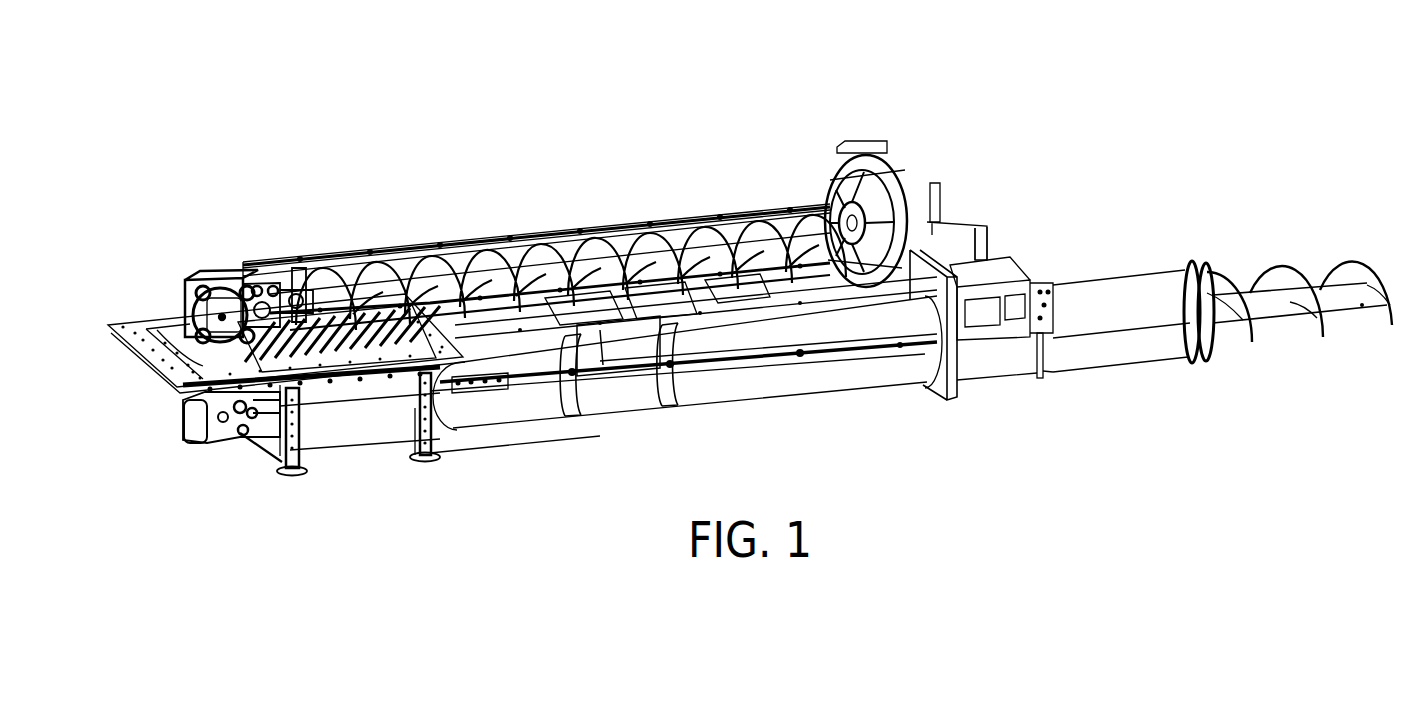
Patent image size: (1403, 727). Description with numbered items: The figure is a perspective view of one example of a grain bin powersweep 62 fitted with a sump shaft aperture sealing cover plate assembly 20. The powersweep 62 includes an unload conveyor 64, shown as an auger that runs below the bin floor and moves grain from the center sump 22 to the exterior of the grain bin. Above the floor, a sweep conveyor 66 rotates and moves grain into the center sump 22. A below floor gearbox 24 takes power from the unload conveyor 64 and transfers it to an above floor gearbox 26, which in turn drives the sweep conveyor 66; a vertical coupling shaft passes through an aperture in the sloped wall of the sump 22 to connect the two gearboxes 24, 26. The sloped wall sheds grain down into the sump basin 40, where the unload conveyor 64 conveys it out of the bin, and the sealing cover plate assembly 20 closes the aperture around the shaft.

The sump shaft aperture sealing cover plate assembly 20 is at (170, 322).
The center sump 22 is at (388, 450).
The below floor gearbox 24 is at (188, 392).
The above floor gearbox 26 is at (215, 276).
The sump basin 40 is at (345, 433).
The powersweep 62 is at (577, 117).
The unload conveyor 64 is at (827, 367).
The sweep conveyor 66 is at (475, 285).